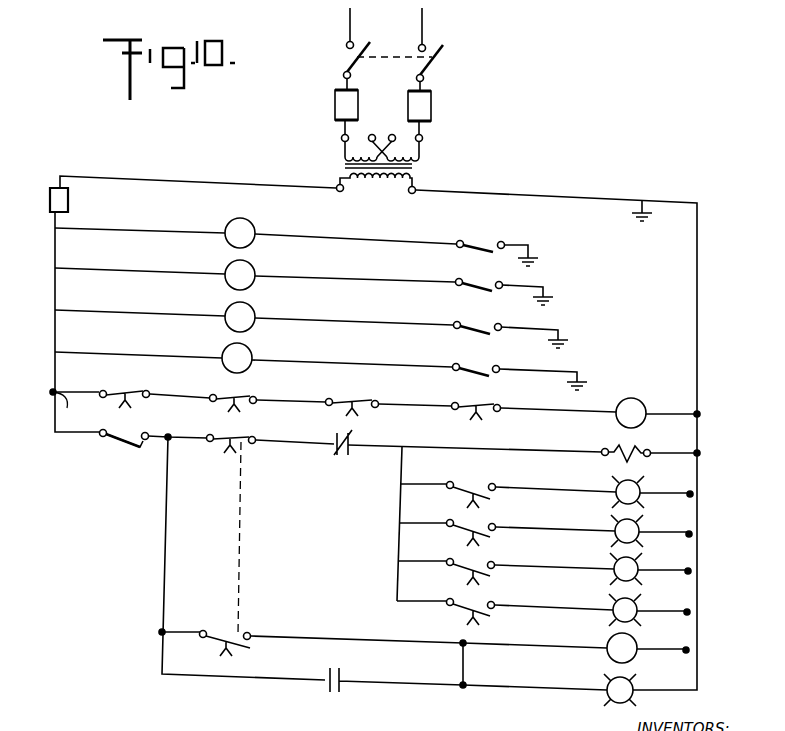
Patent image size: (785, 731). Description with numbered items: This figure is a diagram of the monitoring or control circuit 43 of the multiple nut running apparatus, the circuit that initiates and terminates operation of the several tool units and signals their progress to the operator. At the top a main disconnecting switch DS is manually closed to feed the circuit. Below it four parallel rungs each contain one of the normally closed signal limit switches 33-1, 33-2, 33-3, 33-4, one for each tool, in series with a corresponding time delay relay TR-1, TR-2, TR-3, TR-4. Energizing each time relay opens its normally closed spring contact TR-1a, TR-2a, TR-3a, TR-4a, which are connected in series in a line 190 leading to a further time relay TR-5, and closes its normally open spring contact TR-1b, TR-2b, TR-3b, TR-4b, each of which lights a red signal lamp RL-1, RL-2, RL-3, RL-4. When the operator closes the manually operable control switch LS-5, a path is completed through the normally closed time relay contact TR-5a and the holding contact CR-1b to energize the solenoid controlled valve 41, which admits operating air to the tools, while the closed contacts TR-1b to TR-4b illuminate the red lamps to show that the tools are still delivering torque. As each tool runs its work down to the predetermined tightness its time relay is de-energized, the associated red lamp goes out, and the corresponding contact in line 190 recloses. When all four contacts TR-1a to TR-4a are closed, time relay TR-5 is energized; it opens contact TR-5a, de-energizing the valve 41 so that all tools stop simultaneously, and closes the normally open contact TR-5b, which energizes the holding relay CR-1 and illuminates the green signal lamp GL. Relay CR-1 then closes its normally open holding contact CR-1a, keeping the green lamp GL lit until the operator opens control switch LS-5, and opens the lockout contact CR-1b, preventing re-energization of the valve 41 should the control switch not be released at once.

The main disconnecting switch DS is at (440, 73).
The monitoring or control circuit 43 is at (448, 188).
The time delay relay TR-1 is at (253, 226).
The time delay relay TR-2 is at (253, 268).
The time delay relay TR-3 is at (252, 310).
The time delay relay TR-4 is at (250, 351).
The time relay TR-5 is at (637, 399).
The signal limit switch 33-1 is at (482, 242).
The signal limit switch 33-2 is at (483, 275).
The signal limit switch 33-3 is at (480, 318).
The signal limit switch 33-4 is at (475, 360).
The normally closed spring contact TR-1a is at (124, 385).
The normally closed spring contact TR-2a is at (233, 396).
The normally closed spring contact TR-3a is at (351, 401).
The normally closed spring contact TR-4a is at (475, 405).
The line 190 is at (53, 405).
The manually operable control switch LS-5 is at (104, 441).
The normally closed time relay contact TR-5a is at (213, 446).
The holding contact CR-1b is at (341, 458).
The solenoid controlled valve 41 is at (617, 448).
The normally open spring contact TR-1b is at (449, 483).
The normally open spring contact TR-2b is at (449, 521).
The normally open spring contact TR-3b is at (449, 560).
The normally open spring contact TR-4b is at (449, 600).
The red signal lamp RL-1 is at (640, 487).
The red signal lamp RL-2 is at (640, 527).
The red signal lamp RL-3 is at (639, 565).
The red signal lamp RL-4 is at (637, 605).
The holding relay CR-1 is at (634, 643).
The normally open contact TR-5b is at (203, 631).
The normally open holding contact CR-1a is at (325, 692).
The green signal lamp GL is at (606, 696).